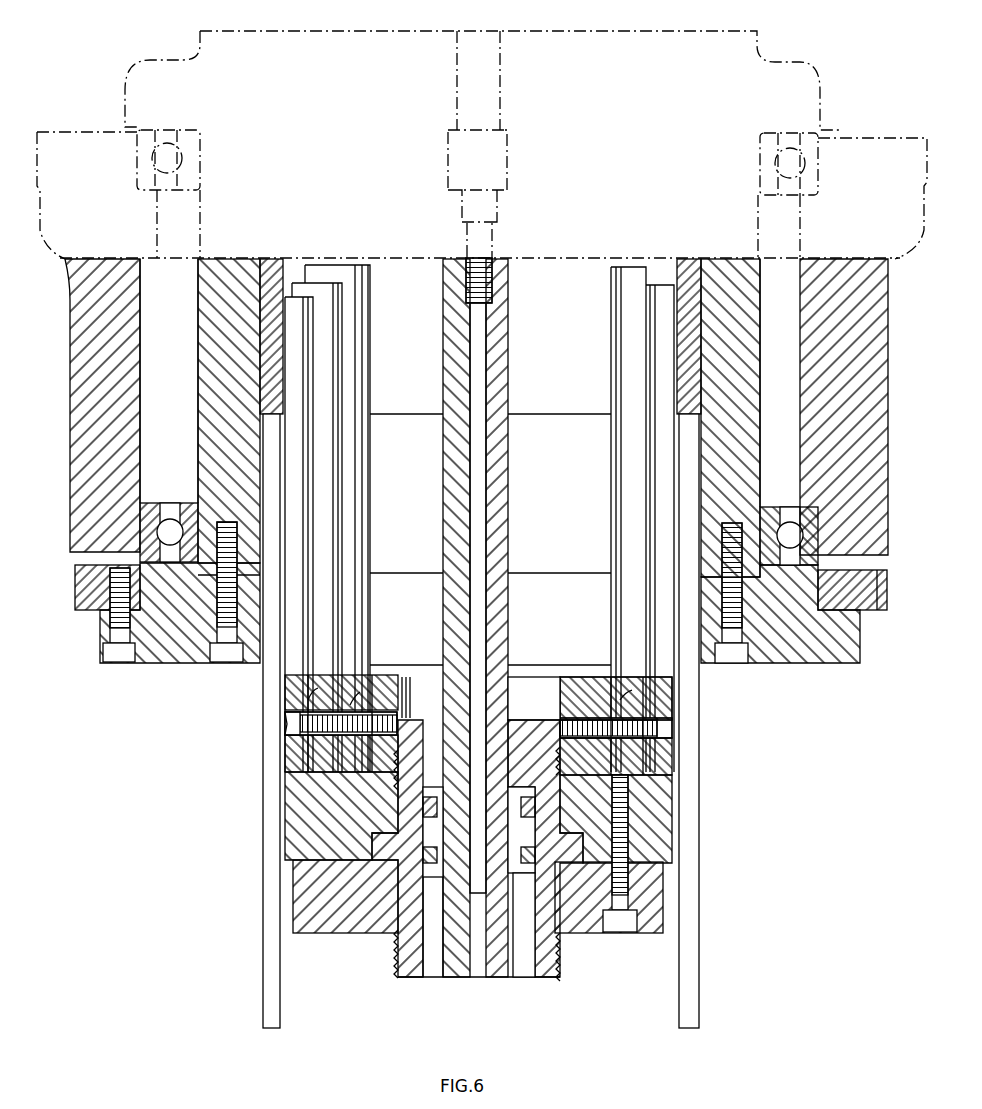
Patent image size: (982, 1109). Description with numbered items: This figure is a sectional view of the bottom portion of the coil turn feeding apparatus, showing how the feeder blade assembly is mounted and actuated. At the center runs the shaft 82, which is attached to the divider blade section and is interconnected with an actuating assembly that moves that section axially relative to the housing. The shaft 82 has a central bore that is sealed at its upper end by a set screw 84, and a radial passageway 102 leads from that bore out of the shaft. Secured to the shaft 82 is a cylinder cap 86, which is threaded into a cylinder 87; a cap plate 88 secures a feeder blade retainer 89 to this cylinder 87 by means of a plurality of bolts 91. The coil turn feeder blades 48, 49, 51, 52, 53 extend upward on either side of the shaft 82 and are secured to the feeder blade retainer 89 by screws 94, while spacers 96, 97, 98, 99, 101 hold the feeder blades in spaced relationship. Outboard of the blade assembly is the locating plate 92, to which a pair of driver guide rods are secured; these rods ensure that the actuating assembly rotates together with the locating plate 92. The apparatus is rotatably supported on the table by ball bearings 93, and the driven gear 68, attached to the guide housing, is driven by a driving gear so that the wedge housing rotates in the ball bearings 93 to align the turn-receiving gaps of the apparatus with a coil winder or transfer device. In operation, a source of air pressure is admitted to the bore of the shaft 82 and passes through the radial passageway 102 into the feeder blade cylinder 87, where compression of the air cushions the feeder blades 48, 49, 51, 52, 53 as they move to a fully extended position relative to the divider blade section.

The coil turn feeder blade 48 is at (660, 290).
The coil turn feeder blade 49 is at (629, 293).
The coil turn feeder blade 51 is at (289, 300).
The coil turn feeder blade 52 is at (318, 296).
The coil turn feeder blade 53 is at (346, 272).
The driven gear 68 is at (886, 595).
The shaft 82 is at (507, 533).
The set screw 84 is at (492, 283).
The cylinder cap 86 is at (540, 720).
The cylinder 87 is at (548, 808).
The cap plate 88 is at (320, 918).
The feeder blade retainer 89 is at (580, 686).
The bolt 91 is at (620, 928).
The locating plate 92 is at (832, 650).
The ball bearing 93 is at (171, 502).
The screw 94 is at (292, 735).
The spacer 96 is at (292, 688).
The spacer 97 is at (325, 690).
The spacer 98 is at (355, 700).
The spacer 99 is at (628, 695).
The spacer 101 is at (664, 688).
The radial passageway 102 is at (522, 893).